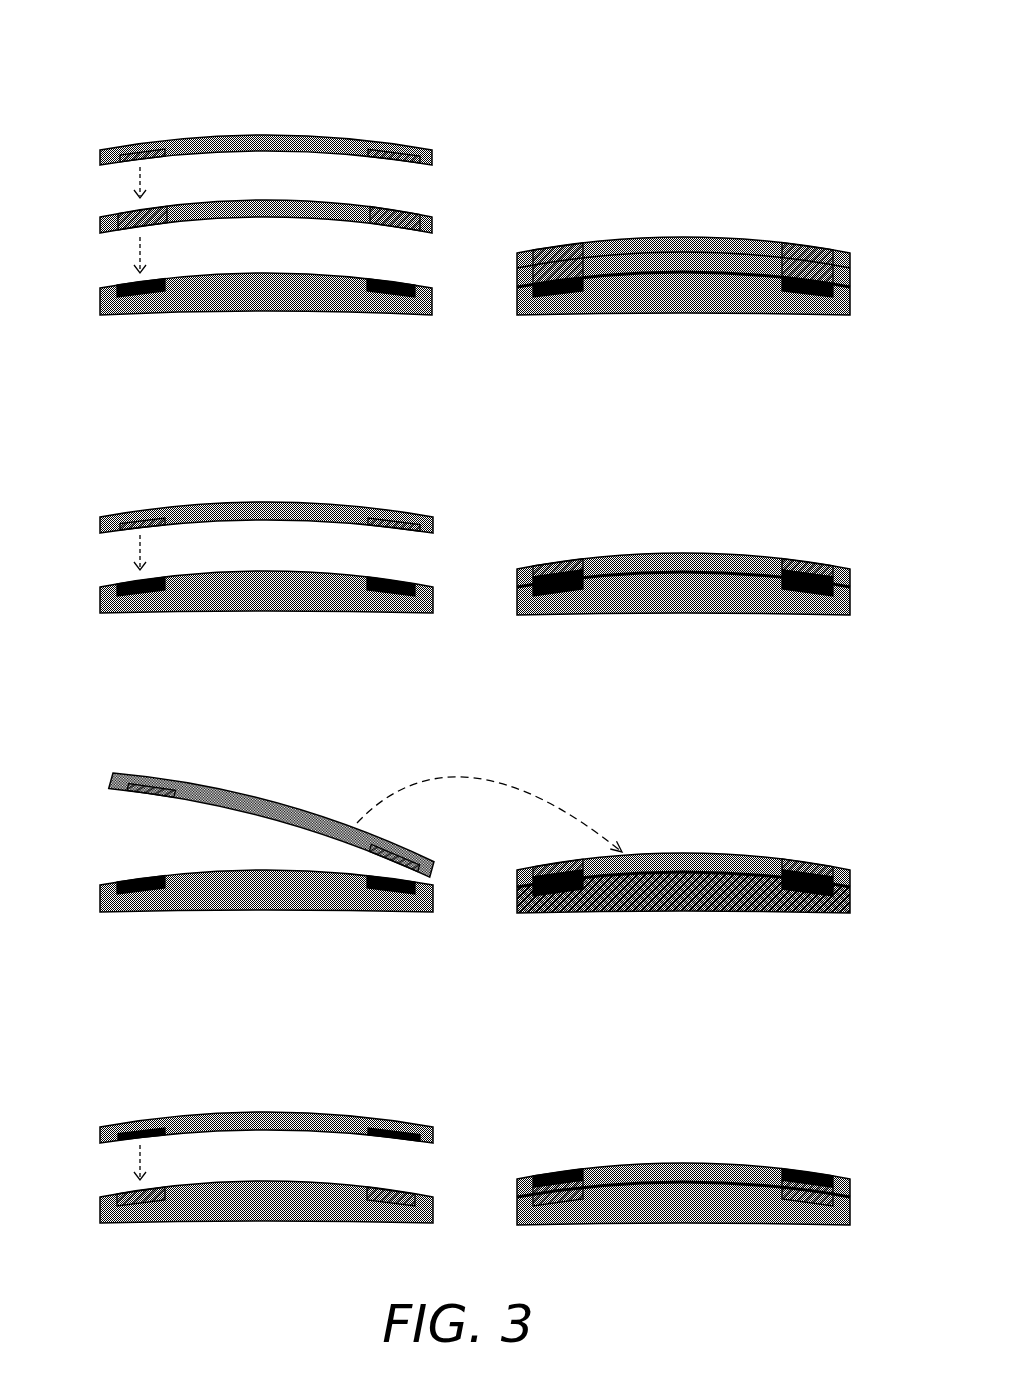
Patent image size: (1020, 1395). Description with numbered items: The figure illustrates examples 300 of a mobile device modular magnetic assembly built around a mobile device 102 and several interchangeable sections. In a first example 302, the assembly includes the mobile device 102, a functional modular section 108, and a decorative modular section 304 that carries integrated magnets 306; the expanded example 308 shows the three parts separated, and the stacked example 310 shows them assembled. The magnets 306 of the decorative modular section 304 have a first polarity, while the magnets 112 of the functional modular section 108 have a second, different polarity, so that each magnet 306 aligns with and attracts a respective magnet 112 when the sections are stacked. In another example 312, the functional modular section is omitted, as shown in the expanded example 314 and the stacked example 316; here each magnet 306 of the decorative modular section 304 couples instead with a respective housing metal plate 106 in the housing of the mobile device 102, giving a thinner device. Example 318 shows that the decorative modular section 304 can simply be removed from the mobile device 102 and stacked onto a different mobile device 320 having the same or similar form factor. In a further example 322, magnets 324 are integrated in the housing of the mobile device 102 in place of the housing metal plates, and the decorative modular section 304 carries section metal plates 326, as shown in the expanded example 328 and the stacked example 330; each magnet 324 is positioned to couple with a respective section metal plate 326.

The examples of the mobile device modular magnetic assembly 300 is at (715, 83).
The example 302 is at (517, 118).
The decorative modular section 304 is at (248, 184).
The magnets 306 is at (125, 152).
The expanded example 308 is at (215, 92).
The stacked example 310 is at (760, 205).
The example 312 is at (517, 450).
The expanded example 314 is at (215, 460).
The stacked example 316 is at (760, 502).
The example 318 is at (517, 748).
The different mobile device 320 is at (665, 945).
The example 322 is at (517, 1060).
The magnets 324 is at (122, 1193).
The section metal plates 326 is at (123, 1133).
The expanded example 328 is at (215, 1070).
The stacked example 330 is at (760, 1112).
The mobile device 102 is at (248, 348).
The housing metal plates 106 is at (122, 284).
The functional modular section 108 is at (248, 254).
The magnets 112 is at (128, 215).